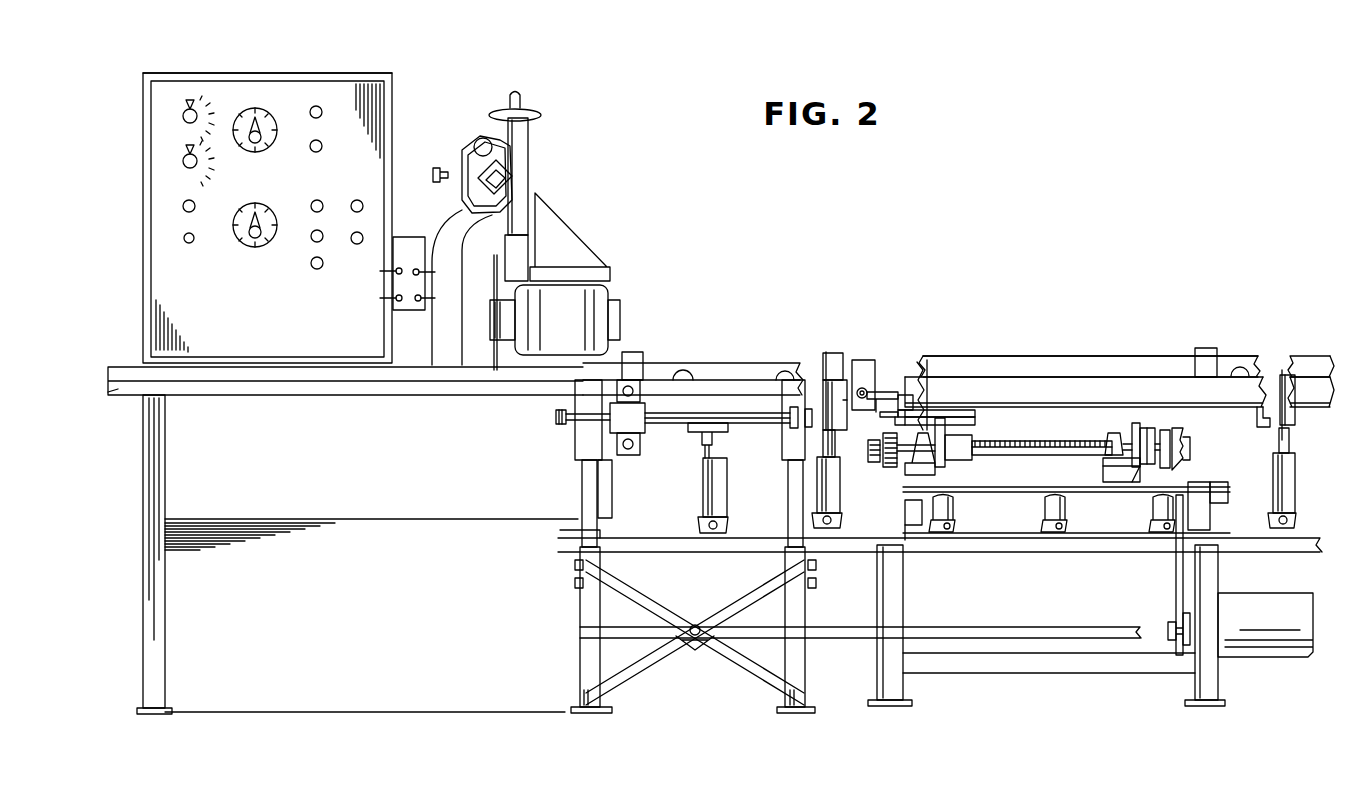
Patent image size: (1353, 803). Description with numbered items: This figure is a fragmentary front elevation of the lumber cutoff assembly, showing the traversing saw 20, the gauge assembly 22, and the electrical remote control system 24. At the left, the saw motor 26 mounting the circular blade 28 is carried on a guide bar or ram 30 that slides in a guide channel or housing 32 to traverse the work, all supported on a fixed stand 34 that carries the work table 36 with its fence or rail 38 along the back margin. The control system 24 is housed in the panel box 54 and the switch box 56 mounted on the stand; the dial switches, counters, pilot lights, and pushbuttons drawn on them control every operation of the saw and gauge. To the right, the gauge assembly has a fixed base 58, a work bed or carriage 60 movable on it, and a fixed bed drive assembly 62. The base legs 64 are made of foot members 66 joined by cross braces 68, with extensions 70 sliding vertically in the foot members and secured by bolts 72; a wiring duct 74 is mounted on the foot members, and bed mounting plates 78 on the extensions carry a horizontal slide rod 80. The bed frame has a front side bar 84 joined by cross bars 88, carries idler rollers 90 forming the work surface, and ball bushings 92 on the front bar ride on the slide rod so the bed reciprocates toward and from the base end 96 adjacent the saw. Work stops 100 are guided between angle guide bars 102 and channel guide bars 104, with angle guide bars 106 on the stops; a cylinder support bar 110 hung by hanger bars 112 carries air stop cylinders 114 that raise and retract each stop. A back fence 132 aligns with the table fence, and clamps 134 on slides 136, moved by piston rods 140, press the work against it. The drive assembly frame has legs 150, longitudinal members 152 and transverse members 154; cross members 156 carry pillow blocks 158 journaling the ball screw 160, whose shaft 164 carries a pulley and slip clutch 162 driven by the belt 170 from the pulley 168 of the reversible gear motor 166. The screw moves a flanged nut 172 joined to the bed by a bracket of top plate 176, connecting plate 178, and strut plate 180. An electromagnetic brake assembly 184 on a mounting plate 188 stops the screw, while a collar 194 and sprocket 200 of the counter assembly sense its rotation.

The cutoff or traversing saw 20 is at (543, 256).
The gauge assembly 22 is at (946, 314).
The electrical remote control system 24 is at (181, 70).
The saw motor 26 is at (611, 300).
The circular blade 28 is at (490, 385).
The guide bar or ram 30 is at (500, 181).
The guide channel or housing 32 is at (466, 152).
The fixed stand 34 is at (147, 507).
The work table 36 is at (108, 394).
The fence or rail 38 is at (116, 372).
The panel box 54 is at (280, 200).
The switch box 56 is at (406, 237).
The fixed base 58 is at (562, 613).
The work bed or carriage 60 is at (983, 353).
The fixed bed drive assembly 62 is at (1233, 664).
The telescopically adjustable legs 64 is at (609, 719).
The foot members 66 is at (600, 642).
The cross braces 68 is at (693, 645).
The extensions 70 is at (583, 490).
The bolts 72 is at (575, 583).
The wiring duct 74 is at (1020, 630).
The bed mounting plates 78 is at (575, 450).
The slide rod 80 is at (757, 412).
The front side bar 84 is at (1125, 376).
The cross bars 88 is at (903, 395).
The idler rollers 90 is at (678, 370).
The ball bushings or bearings 92 is at (640, 425).
The end of base adjacent the saw 96 is at (564, 422).
The work stops or stop plates 100 is at (823, 360).
The angle guide bars 102 is at (1260, 428).
The channel guide bars 104 is at (833, 400).
The angle guide bars 106 is at (826, 352).
The cylinder support bar 110 is at (1010, 535).
The hanger bars 112 is at (922, 380).
The air stop cylinders 114 is at (607, 495).
The back side fence or rail 132 is at (1068, 356).
The clamps 134 is at (636, 352).
The slides 136 is at (880, 392).
The piston rod 140 is at (862, 386).
The supports or legs 150 is at (900, 598).
The longitudinally extending frame members 152 is at (965, 495).
The transversely extending frame members 154 is at (913, 535).
The cross members 156 is at (1110, 475).
The pillow block 158 is at (1112, 433).
The screw 160 is at (1045, 443).
The combination pulley and slip clutch 162 is at (1178, 432).
The screw shaft 164 is at (1135, 430).
The reversible gear motor 166 is at (1272, 582).
The pulley 168 is at (1172, 625).
The drive belt 170 is at (1176, 560).
The flanged nut 172 is at (958, 455).
The horizontal top plate 176 is at (950, 420).
The vertical connecting plate 178 is at (945, 425).
The strut plate 180 is at (930, 412).
The electromagnetic brake assembly 184 is at (1153, 421).
The mounting plate 188 is at (1140, 478).
The collar 194 is at (905, 508).
The sprocket 200 is at (870, 450).